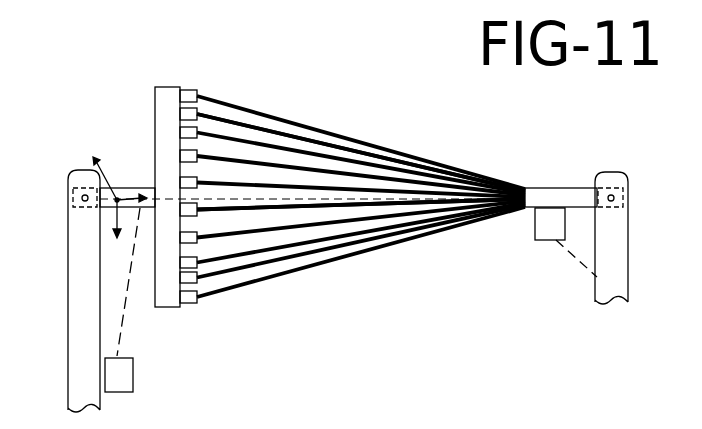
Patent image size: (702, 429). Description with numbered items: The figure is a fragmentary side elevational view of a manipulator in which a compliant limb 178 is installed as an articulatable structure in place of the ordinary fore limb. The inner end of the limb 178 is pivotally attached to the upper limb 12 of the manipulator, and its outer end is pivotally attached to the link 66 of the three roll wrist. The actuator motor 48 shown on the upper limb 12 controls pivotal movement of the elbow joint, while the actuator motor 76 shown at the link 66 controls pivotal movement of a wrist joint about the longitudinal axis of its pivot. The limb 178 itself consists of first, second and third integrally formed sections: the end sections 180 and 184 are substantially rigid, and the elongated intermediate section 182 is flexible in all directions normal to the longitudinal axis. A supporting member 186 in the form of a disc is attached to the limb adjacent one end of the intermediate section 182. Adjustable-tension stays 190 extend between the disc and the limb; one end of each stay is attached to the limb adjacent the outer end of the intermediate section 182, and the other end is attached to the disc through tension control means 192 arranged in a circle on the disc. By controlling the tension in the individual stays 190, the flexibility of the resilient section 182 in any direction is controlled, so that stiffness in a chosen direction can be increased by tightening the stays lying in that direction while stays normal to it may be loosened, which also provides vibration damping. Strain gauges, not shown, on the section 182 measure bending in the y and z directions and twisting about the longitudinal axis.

The upper limb 12 is at (68, 290).
The actuator motor 48 is at (133, 376).
The link 66 is at (628, 283).
The actuator motor 76 is at (535, 240).
The limb 178 is at (390, 130).
The first section 180 is at (120, 190).
The intermediate section 182 is at (252, 198).
The third section 184 is at (557, 188).
The supporting member 186 is at (155, 88).
The adjustable-tension stays 190 is at (245, 120).
The tension control means 192 is at (185, 92).